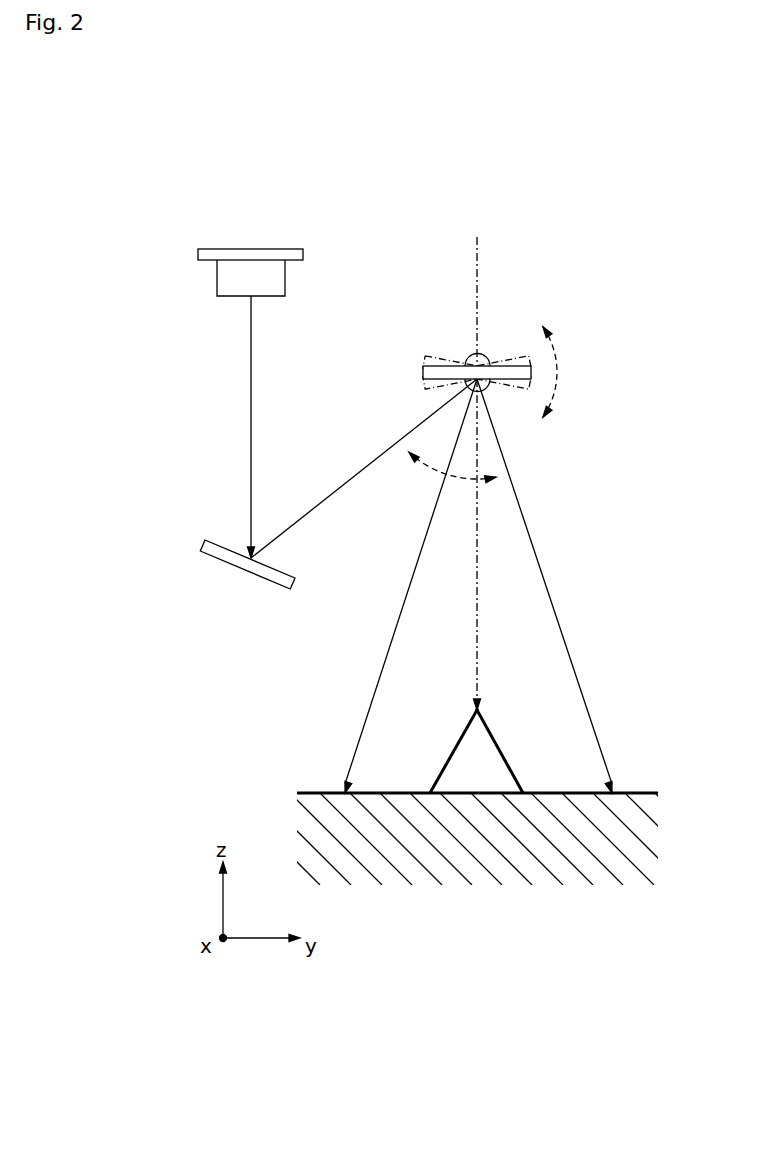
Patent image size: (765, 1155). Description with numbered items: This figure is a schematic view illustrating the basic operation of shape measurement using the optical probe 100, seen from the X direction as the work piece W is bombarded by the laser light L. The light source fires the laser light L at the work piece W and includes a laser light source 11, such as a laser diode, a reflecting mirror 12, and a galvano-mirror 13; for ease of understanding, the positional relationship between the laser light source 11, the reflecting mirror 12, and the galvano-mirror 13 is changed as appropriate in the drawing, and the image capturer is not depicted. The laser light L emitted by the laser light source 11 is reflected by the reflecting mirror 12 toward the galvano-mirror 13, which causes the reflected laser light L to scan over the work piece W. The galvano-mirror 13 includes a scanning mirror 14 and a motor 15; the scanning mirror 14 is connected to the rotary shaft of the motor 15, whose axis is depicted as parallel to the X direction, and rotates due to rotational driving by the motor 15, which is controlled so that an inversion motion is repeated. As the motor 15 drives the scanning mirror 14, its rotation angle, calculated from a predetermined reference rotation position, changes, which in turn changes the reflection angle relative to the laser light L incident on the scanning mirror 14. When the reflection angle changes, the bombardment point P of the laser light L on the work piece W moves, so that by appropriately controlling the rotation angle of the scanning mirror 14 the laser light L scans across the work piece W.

The optical probe 100 is at (478, 180).
The laser light source 11 is at (266, 249).
The reflecting mirror 12 is at (262, 582).
The galvano-mirror 13 is at (502, 326).
The scanning mirror 14 is at (422, 368).
The motor 15 is at (472, 353).
The laser light L is at (250, 412).
The bombardment point P is at (480, 712).
The work piece W is at (505, 752).